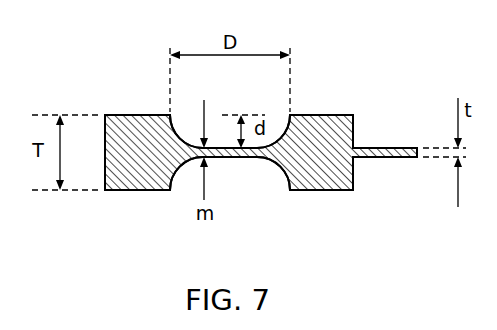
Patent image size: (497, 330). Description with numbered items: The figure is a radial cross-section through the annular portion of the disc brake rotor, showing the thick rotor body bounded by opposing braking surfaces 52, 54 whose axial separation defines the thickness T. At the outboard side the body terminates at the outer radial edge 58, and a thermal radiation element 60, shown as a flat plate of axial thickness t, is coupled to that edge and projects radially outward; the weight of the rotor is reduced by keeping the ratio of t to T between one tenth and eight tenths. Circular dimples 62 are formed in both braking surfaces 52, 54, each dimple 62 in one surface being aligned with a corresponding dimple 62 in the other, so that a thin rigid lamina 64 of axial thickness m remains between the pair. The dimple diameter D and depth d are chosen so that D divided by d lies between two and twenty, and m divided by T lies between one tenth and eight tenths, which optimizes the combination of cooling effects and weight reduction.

The braking surface 52 is at (125, 115).
The braking surface 54 is at (120, 190).
The outer radial edge 58 is at (355, 123).
The thermal radiation element 60 is at (400, 148).
The dimple 62 is at (282, 136).
The lamina 64 is at (247, 157).